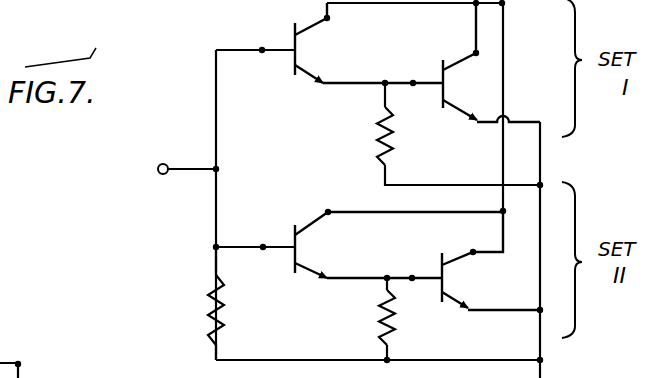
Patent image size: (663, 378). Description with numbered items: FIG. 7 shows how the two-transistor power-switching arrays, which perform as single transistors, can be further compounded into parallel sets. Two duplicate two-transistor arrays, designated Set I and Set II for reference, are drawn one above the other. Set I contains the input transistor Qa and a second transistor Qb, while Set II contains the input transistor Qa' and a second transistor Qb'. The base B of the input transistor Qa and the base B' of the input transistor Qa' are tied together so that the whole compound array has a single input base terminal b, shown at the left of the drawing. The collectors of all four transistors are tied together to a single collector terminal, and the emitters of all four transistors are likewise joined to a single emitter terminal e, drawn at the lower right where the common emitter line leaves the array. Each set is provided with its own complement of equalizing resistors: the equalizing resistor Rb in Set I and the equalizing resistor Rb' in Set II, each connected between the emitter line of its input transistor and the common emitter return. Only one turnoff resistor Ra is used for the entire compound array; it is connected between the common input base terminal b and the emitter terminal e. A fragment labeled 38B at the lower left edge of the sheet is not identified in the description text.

The input base terminal b is at (179, 156).
The base of input transistor Qa B is at (260, 36).
The base of input transistor Qa' B' is at (255, 234).
The input transistor Qa is at (369, 44).
The second transistor of Set I Qb is at (491, 62).
The input transistor of Set II Qa' is at (399, 245).
The second transistor of Set II Qb' is at (492, 262).
The turnoff resistor Ra is at (235, 303).
The equalizing resistor Rb is at (460, 135).
The equalizing resistor of Set II Rb' is at (409, 320).
The emitter terminal e is at (509, 350).
The component 38B is at (69, 361).